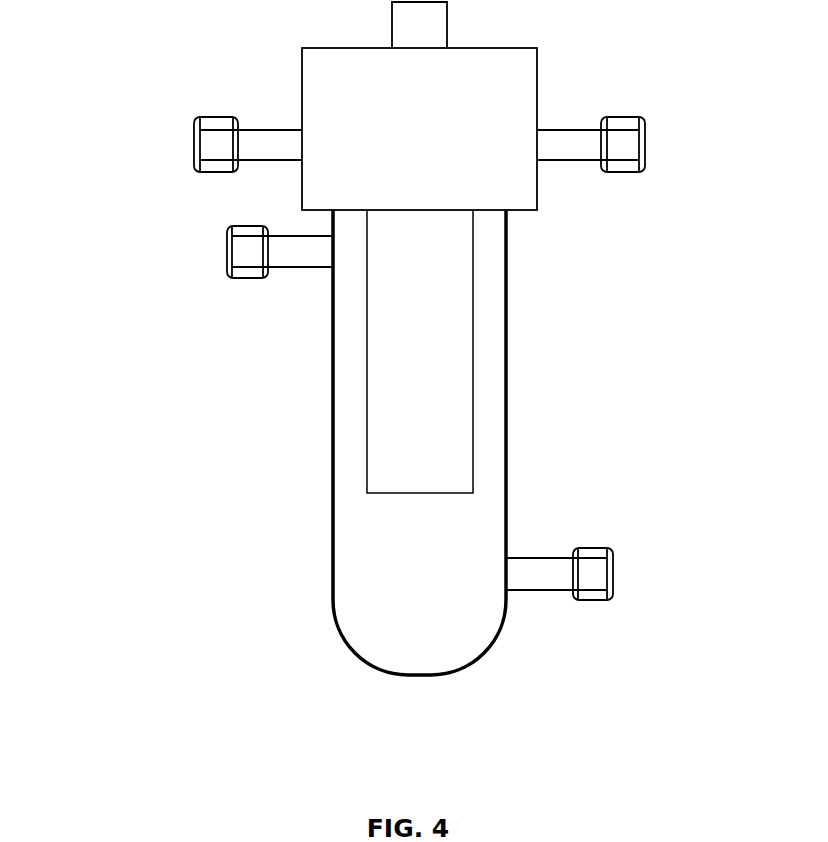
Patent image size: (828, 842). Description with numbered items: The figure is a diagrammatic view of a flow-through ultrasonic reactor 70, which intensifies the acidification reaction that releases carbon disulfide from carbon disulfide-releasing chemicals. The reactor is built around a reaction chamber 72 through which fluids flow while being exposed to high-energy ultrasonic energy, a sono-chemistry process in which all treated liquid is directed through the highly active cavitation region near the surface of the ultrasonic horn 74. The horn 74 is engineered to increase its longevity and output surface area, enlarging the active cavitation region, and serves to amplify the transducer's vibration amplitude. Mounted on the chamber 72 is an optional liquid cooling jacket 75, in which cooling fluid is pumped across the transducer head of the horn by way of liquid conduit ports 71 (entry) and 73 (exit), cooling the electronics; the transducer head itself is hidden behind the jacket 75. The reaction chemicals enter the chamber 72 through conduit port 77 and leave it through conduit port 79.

The flow-through ultrasonic reactor 70 is at (232, 422).
The liquid conduit port 71 is at (265, 128).
The reaction chamber 72 is at (431, 608).
The liquid conduit port 73 is at (557, 128).
The ultrasonic horn 74 is at (431, 363).
The liquid cooling jacket 75 is at (436, 143).
The conduit port 77 is at (303, 252).
The conduit port 79 is at (530, 578).